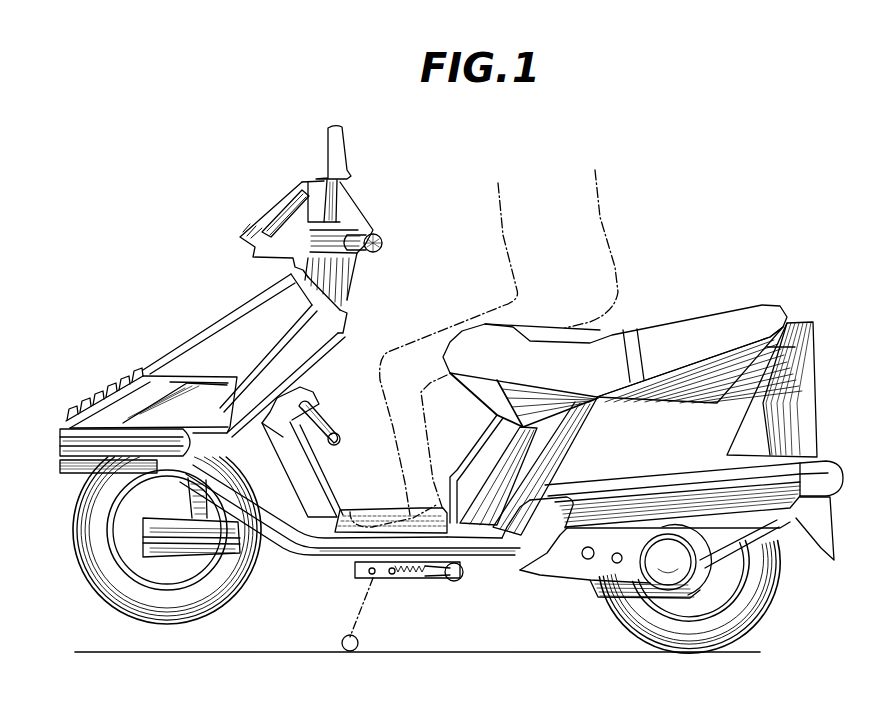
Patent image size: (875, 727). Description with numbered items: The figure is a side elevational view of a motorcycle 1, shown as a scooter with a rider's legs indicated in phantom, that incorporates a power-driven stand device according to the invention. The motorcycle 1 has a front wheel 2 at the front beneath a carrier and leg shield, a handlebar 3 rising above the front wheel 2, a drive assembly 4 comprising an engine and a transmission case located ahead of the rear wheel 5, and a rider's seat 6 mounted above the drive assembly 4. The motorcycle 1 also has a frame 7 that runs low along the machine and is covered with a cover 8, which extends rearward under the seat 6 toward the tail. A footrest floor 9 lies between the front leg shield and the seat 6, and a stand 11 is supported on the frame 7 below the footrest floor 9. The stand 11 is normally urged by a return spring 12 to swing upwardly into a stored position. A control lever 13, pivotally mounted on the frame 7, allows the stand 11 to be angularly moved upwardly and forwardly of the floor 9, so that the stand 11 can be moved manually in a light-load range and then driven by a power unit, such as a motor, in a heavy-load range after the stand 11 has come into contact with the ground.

The motorcycle 1 is at (259, 188).
The front wheel 2 is at (87, 560).
The handlebar 3 is at (368, 234).
The drive assembly 4 is at (568, 560).
The rear wheel 5 is at (778, 593).
The rider's seat 6 is at (565, 328).
The frame 7 is at (303, 558).
The cover 8 is at (727, 433).
The footrest floor 9 is at (367, 517).
The stand 11 is at (429, 587).
The return spring 12 is at (403, 579).
The control lever 13 is at (338, 427).